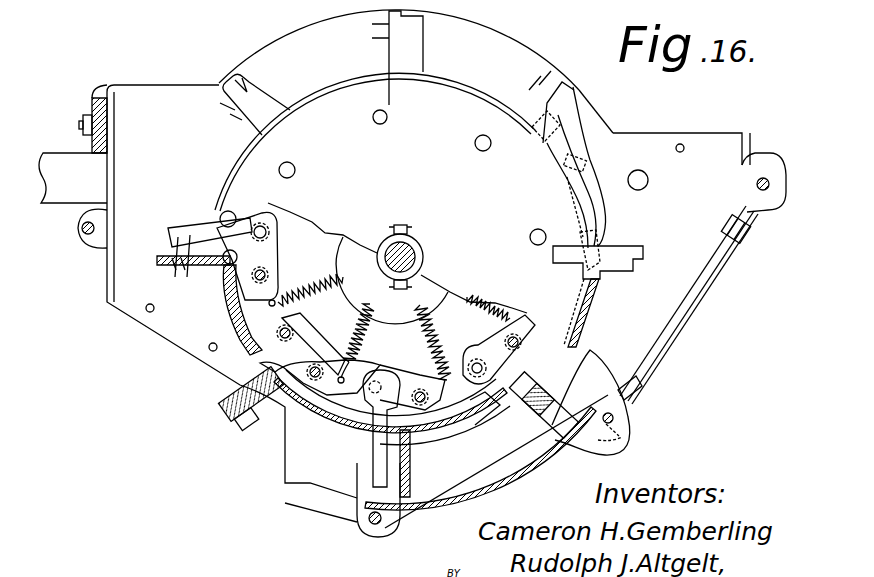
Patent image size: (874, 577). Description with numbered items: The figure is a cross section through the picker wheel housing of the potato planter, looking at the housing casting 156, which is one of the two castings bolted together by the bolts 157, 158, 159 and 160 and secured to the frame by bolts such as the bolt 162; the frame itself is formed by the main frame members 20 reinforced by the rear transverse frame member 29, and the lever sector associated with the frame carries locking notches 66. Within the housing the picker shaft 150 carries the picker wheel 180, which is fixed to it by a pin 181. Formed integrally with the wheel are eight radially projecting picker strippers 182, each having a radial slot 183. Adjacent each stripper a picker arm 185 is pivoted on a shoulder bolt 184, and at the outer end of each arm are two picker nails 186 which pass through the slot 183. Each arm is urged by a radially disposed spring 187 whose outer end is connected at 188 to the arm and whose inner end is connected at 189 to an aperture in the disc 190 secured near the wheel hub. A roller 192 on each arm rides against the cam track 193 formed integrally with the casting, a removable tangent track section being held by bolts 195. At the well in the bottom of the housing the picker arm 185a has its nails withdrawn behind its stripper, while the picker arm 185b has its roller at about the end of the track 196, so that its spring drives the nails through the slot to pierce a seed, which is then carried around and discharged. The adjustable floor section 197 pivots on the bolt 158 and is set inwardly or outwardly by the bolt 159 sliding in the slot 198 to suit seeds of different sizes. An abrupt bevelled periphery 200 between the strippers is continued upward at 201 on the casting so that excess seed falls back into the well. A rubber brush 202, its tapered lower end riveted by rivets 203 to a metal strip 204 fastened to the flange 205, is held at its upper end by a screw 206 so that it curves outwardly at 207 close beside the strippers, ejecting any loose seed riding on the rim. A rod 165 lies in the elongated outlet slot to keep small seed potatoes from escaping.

The main frame member 20 is at (55, 153).
The rear transverse frame member 29 is at (92, 105).
The locking notches 66 is at (735, 228).
The picker shaft 150 is at (423, 257).
The picker wheel housing casting 156 is at (652, 143).
The bolt 157 is at (81, 228).
The bolt 158 is at (374, 524).
The bolt 159 is at (614, 418).
The bolt 160 is at (752, 198).
The bolt 162 is at (260, 97).
The rod 165 is at (712, 270).
The picker wheel 180 is at (374, 124).
The pin 181 is at (397, 225).
The picker stripper 182 is at (157, 262).
The slot 183 is at (173, 265).
The shoulder bolt 184 is at (268, 276).
The picker arm 185 is at (181, 226).
The picker arm 185a is at (403, 473).
The picker arm 185b is at (520, 430).
The picker nails 186 is at (181, 278).
The spring 187 is at (360, 316).
The spring outer end connection 188 is at (230, 320).
The spring inner end connection 189 is at (394, 285).
The disc 190 is at (398, 310).
The roller 192 is at (330, 221).
The cam track 193 is at (349, 398).
The bolts 195 is at (228, 210).
The end of the track 196 is at (471, 402).
The adjustable floor section 197 is at (510, 493).
The slot 198 is at (622, 437).
The bevelled periphery 200 is at (450, 100).
The bevelled continuation 201 is at (518, 62).
The rubber brush 202 is at (562, 146).
The rivets 203 is at (587, 238).
The metal strip 204 is at (578, 290).
The flange 205 is at (589, 311).
The screw 206 is at (582, 167).
The outwardly curved brush portion 207 is at (607, 212).